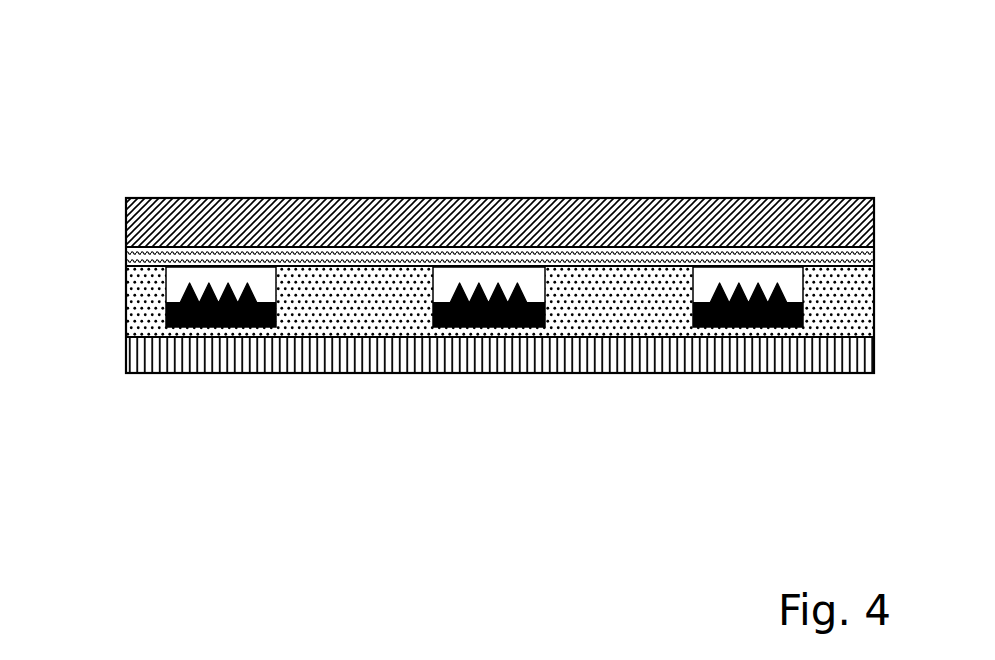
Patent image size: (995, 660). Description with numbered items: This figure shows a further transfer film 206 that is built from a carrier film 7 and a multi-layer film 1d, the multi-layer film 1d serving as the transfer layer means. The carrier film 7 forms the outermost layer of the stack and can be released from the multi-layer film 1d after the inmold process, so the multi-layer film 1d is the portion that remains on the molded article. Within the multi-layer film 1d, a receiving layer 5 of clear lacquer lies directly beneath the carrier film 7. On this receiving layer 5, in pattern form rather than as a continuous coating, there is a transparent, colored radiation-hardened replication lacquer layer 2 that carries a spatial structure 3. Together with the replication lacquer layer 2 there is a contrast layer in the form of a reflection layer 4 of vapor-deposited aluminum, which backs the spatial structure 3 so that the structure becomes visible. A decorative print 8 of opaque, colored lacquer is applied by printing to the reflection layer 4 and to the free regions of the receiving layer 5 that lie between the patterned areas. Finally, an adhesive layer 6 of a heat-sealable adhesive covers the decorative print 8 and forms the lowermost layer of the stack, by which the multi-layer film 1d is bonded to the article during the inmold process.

The transfer film 206 is at (234, 184).
The multi-layer film 1d is at (127, 248).
The replication lacquer layer 2 is at (530, 278).
The spatial structure 3 is at (457, 297).
The reflection layer 4 is at (463, 280).
The receiving layer 5 is at (633, 252).
The adhesive layer 6 is at (597, 353).
The carrier film 7 is at (745, 213).
The decorative print 8 is at (355, 297).